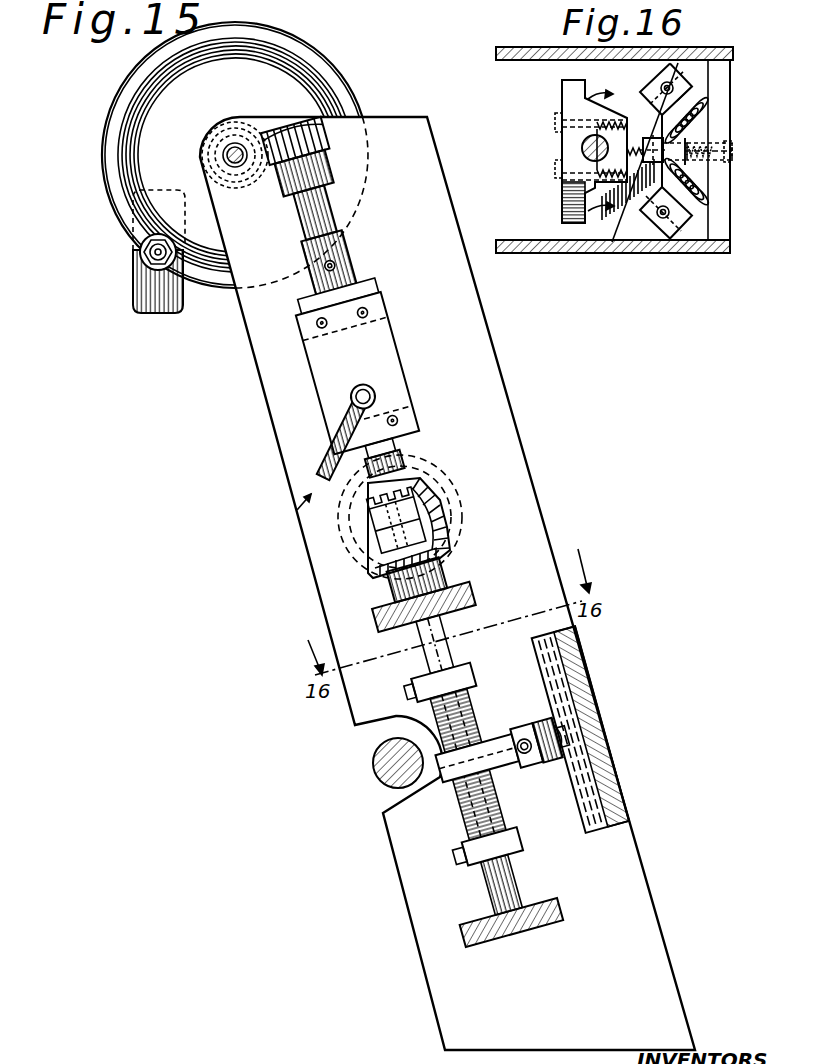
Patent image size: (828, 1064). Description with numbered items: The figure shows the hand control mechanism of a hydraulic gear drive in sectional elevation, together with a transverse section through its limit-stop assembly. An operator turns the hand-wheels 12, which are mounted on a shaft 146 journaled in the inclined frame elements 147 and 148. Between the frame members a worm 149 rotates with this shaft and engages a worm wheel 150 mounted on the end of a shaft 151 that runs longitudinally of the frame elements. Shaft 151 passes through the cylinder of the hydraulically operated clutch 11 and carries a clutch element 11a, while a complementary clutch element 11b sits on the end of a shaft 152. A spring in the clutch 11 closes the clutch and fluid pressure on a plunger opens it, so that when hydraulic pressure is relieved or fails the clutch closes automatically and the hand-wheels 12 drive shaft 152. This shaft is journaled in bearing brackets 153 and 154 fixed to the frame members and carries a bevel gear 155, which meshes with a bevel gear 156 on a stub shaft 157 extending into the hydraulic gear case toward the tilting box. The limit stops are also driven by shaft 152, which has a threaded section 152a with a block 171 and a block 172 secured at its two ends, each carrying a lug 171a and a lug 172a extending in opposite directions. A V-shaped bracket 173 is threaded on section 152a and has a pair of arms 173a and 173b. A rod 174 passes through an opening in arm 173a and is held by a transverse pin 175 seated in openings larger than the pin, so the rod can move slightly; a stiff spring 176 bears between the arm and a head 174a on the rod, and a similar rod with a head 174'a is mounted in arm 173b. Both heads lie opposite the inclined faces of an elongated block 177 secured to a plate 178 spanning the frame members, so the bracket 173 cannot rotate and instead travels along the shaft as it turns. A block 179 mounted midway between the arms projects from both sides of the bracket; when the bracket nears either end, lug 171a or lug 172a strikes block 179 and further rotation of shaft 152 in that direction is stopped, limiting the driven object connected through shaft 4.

In FIG. 15, the shaft 4 is at (373, 768).
In FIG. 15, the hydraulically operated clutch 11 is at (349, 401).
In FIG. 15, the clutch element 11a is at (403, 472).
In FIG. 15, the complementary clutch element 11b is at (370, 514).
In FIG. 15, the hand-wheels 12 is at (240, 38).
In FIG. 15, the shaft 146 is at (227, 153).
In FIG. 16, the frame element 147 is at (513, 253).
In FIG. 15, the frame element 148 is at (278, 394).
In FIG. 16, the frame element 148 is at (510, 47).
In FIG. 15, the worm 149 is at (250, 128).
In FIG. 15, the worm wheel 150 is at (326, 136).
In FIG. 15, the shaft 151 is at (312, 200).
In FIG. 15, the shaft 152 is at (428, 648).
In FIG. 16, the shaft 152 is at (588, 152).
In FIG. 15, the threaded section 152a is at (470, 730).
In FIG. 16, the threaded section 152a is at (575, 185).
In FIG. 15, the bearing bracket 153 is at (464, 594).
In FIG. 15, the bearing bracket 154 is at (496, 940).
In FIG. 15, the bevel gear 155 is at (455, 546).
In FIG. 15, the bevel gear 156 is at (420, 493).
In FIG. 15, the stub shaft 157 is at (366, 550).
In FIG. 15, the block 171 is at (468, 672).
In FIG. 16, the block 171 is at (562, 141).
In FIG. 16, the lug 171a is at (580, 87).
In FIG. 15, the block 172 is at (517, 853).
In FIG. 15, the lug 172a is at (466, 846).
In FIG. 16, the lug 172a is at (572, 225).
In FIG. 15, the V-shaped bracket 173 is at (503, 768).
In FIG. 16, the V-shaped bracket 173 is at (630, 200).
In FIG. 16, the arm 173a is at (700, 95).
In FIG. 16, the arm 173b is at (682, 236).
In FIG. 16, the rod 174 is at (722, 119).
In FIG. 16, the head 174a is at (700, 128).
In FIG. 16, the head 174'a is at (728, 181).
In FIG. 16, the transverse pin 175 is at (696, 60).
In FIG. 16, the stiff spring 176 is at (692, 110).
In FIG. 15, the elongated block 177 is at (552, 760).
In FIG. 16, the elongated block 177 is at (712, 150).
In FIG. 15, the plate 178 is at (600, 781).
In FIG. 16, the plate 178 is at (720, 174).
In FIG. 15, the block 179 is at (540, 736).
In FIG. 16, the block 179 is at (652, 133).